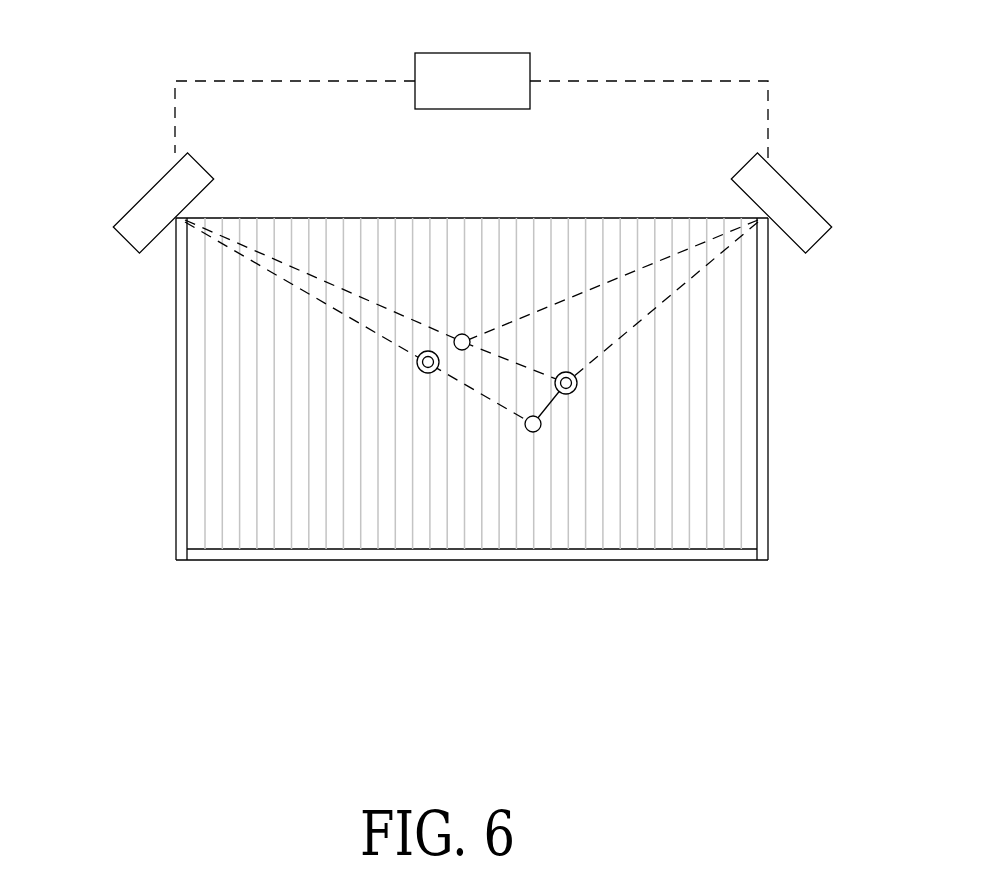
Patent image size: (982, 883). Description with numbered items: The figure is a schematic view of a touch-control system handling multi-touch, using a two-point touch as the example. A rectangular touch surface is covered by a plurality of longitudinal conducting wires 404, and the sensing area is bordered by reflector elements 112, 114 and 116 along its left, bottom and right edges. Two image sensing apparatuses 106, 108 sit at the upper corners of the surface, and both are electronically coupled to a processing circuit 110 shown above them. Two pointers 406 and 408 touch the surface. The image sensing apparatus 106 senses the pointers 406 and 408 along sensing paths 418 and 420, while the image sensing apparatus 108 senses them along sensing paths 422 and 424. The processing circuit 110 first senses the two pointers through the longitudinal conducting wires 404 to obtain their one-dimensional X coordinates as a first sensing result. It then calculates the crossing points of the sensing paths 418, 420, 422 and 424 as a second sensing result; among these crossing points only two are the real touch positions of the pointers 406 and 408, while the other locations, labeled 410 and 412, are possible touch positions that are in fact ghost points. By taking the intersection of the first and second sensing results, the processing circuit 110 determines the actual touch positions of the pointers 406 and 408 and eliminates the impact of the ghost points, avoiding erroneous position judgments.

The image sensing apparatus 106 is at (127, 242).
The image sensing apparatus 108 is at (819, 243).
The processing circuit 110 is at (470, 53).
The reflector element 112 is at (178, 383).
The reflector element 114 is at (212, 552).
The reflector element 116 is at (762, 422).
The longitudinal conducting wires 404 is at (722, 480).
The pointer 406 is at (462, 334).
The pointer 408 is at (533, 432).
The possible touch position 410 is at (430, 351).
The possible touch position 412 is at (566, 394).
The sensing path 418 is at (333, 282).
The sensing path 420 is at (367, 323).
The sensing path 422 is at (597, 285).
The sensing path 424 is at (693, 277).